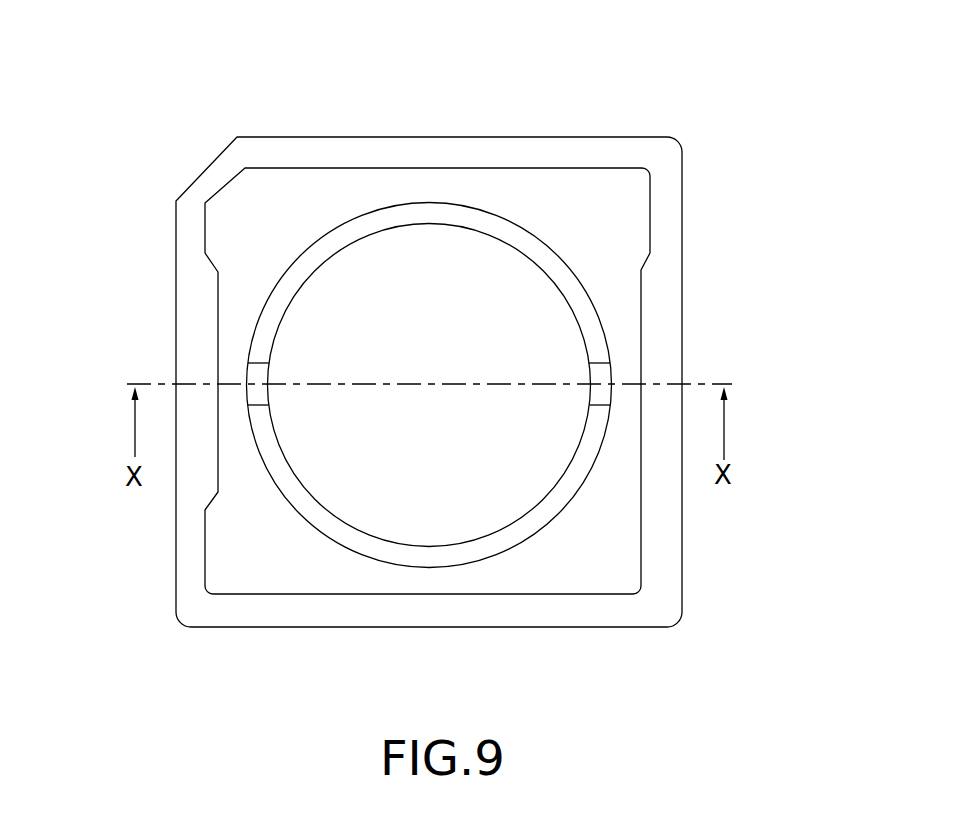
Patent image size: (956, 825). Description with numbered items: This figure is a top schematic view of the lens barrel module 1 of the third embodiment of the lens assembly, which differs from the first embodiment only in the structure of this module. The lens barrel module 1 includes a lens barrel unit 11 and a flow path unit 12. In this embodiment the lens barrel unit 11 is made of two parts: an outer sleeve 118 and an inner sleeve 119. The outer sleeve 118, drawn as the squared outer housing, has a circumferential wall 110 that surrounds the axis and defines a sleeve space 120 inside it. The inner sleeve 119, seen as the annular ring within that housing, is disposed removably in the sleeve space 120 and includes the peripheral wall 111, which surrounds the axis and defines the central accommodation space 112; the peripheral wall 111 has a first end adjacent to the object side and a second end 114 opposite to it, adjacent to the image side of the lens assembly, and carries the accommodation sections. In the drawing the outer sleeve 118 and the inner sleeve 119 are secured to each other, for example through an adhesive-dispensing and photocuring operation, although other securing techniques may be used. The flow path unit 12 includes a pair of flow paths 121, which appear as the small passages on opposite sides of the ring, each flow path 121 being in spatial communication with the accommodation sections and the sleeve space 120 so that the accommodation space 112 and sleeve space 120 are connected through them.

The lens barrel module 1 is at (210, 116).
The lens barrel unit 11 is at (310, 140).
The outer sleeve 118 is at (608, 150).
The peripheral wall 111 is at (542, 349).
The accommodation space 112 is at (533, 262).
The inner sleeve 119 is at (568, 285).
The second end 114 is at (600, 350).
The flow path 121 is at (600, 377).
The flow path unit 12 is at (253, 372).
The circumferential wall 110 is at (536, 385).
The sleeve space 120 is at (590, 472).